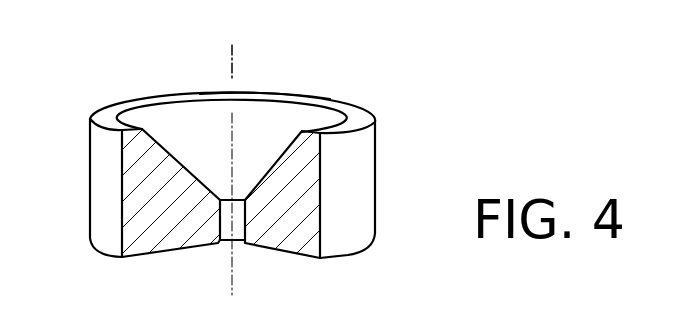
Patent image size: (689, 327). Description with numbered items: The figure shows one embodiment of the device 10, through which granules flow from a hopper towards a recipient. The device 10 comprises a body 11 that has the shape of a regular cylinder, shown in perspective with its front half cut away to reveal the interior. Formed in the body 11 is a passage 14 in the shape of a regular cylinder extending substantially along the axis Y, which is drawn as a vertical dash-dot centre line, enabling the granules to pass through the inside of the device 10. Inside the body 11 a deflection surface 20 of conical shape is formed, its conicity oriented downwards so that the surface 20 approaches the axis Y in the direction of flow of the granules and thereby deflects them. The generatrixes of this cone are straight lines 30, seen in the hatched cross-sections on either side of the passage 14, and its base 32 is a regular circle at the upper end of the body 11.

The device 10 is at (412, 113).
The body 11 is at (376, 175).
The passage 14 is at (239, 227).
The deflection surface 20 is at (168, 120).
The straight lines 30 is at (172, 169).
The base 32 is at (325, 98).
The axis Y is at (233, 70).